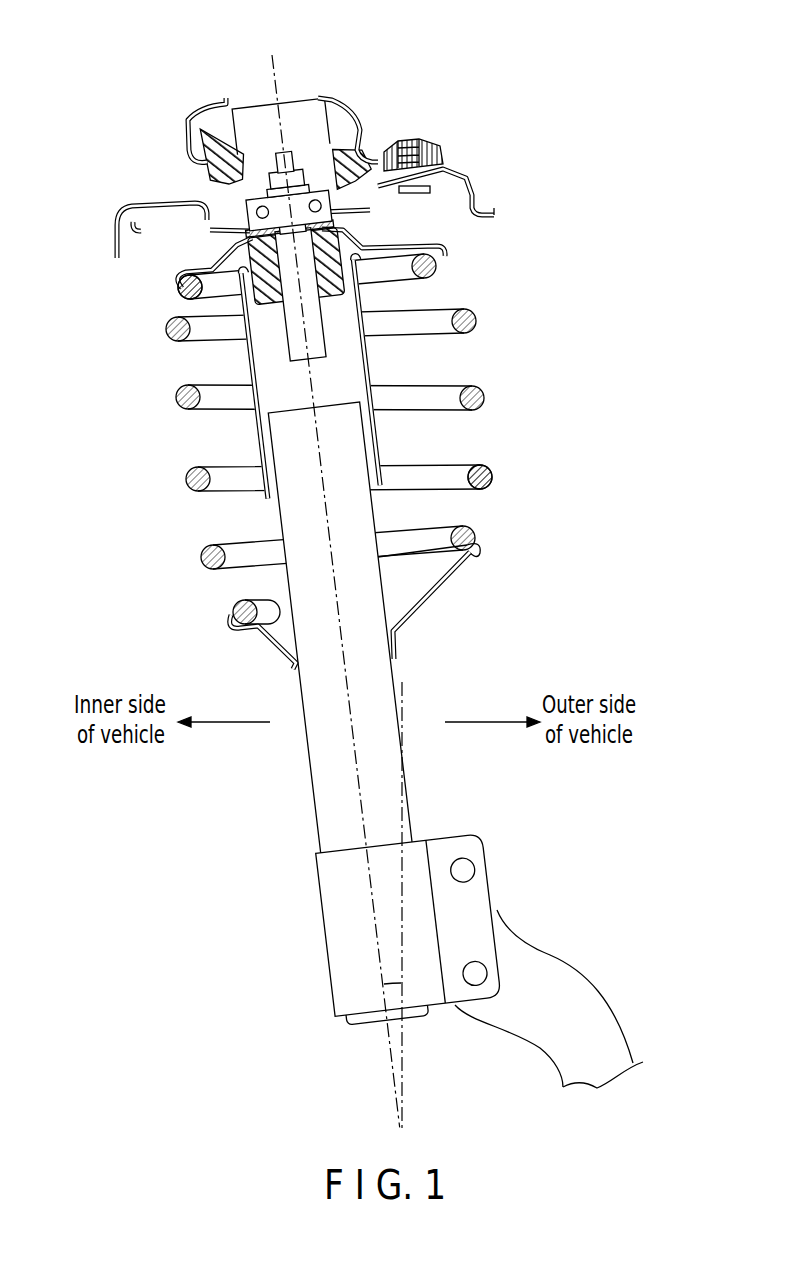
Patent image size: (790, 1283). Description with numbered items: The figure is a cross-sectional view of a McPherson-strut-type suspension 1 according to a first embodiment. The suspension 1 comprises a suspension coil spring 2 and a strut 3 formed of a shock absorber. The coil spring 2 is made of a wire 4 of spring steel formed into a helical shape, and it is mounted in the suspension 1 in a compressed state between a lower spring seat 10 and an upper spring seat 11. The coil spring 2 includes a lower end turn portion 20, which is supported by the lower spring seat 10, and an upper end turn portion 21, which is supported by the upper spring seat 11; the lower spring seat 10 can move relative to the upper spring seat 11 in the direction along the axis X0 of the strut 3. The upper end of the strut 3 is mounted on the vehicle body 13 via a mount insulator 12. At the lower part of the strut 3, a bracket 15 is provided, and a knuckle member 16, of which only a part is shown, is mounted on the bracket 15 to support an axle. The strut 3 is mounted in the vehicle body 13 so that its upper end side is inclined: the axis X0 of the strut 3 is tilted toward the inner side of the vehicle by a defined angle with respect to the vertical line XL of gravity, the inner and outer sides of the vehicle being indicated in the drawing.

The suspension 1 is at (486, 60).
The suspension coil spring 2 is at (484, 415).
The strut 3 is at (306, 742).
The wire 4 is at (482, 322).
The lower spring seat 10 is at (443, 590).
The upper spring seat 11 is at (385, 238).
The mount insulator 12 is at (370, 153).
The vehicle body 13 is at (470, 173).
The bracket 15 is at (483, 875).
The knuckle member 16 is at (587, 983).
The lower end turn portion 20 is at (235, 605).
The upper end turn portion 21 is at (177, 292).
The axis X0 is at (358, 784).
The vertical line XL is at (412, 690).